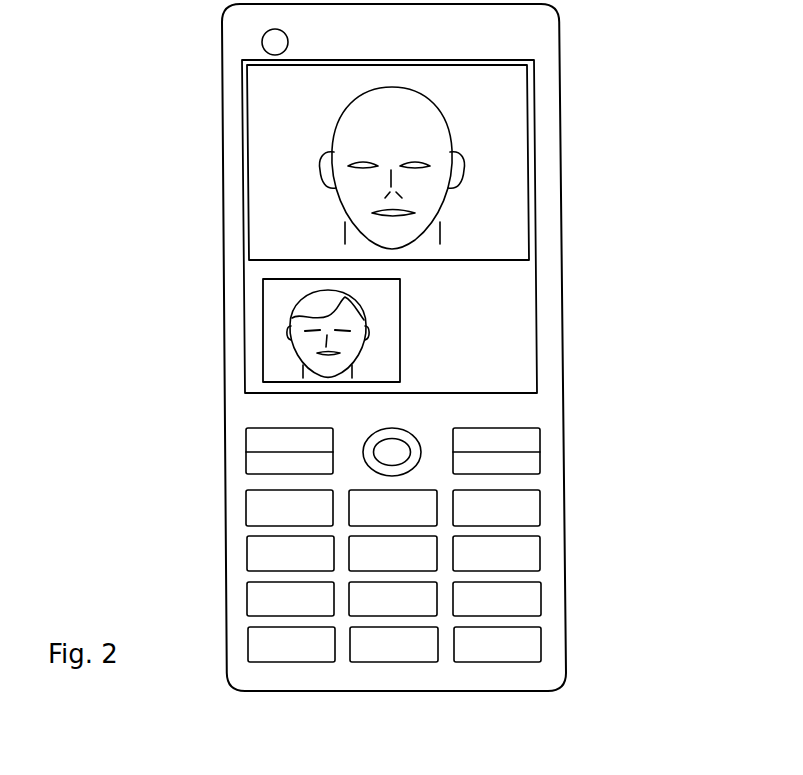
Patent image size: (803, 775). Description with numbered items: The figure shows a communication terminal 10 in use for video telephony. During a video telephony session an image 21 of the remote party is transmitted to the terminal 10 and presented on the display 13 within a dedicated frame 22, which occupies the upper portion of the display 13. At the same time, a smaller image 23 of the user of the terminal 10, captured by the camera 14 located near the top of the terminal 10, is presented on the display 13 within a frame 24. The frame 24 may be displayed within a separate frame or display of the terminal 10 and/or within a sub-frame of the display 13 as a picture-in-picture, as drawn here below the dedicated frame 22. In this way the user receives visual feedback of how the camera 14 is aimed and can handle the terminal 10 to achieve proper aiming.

The communication terminal 10 is at (657, 380).
The display 13 is at (524, 296).
The camera 14 is at (273, 41).
The image of the remote party 21 is at (422, 103).
The dedicated frame 22 is at (528, 127).
The smaller image of the user 23 is at (358, 300).
The frame 24 is at (400, 364).